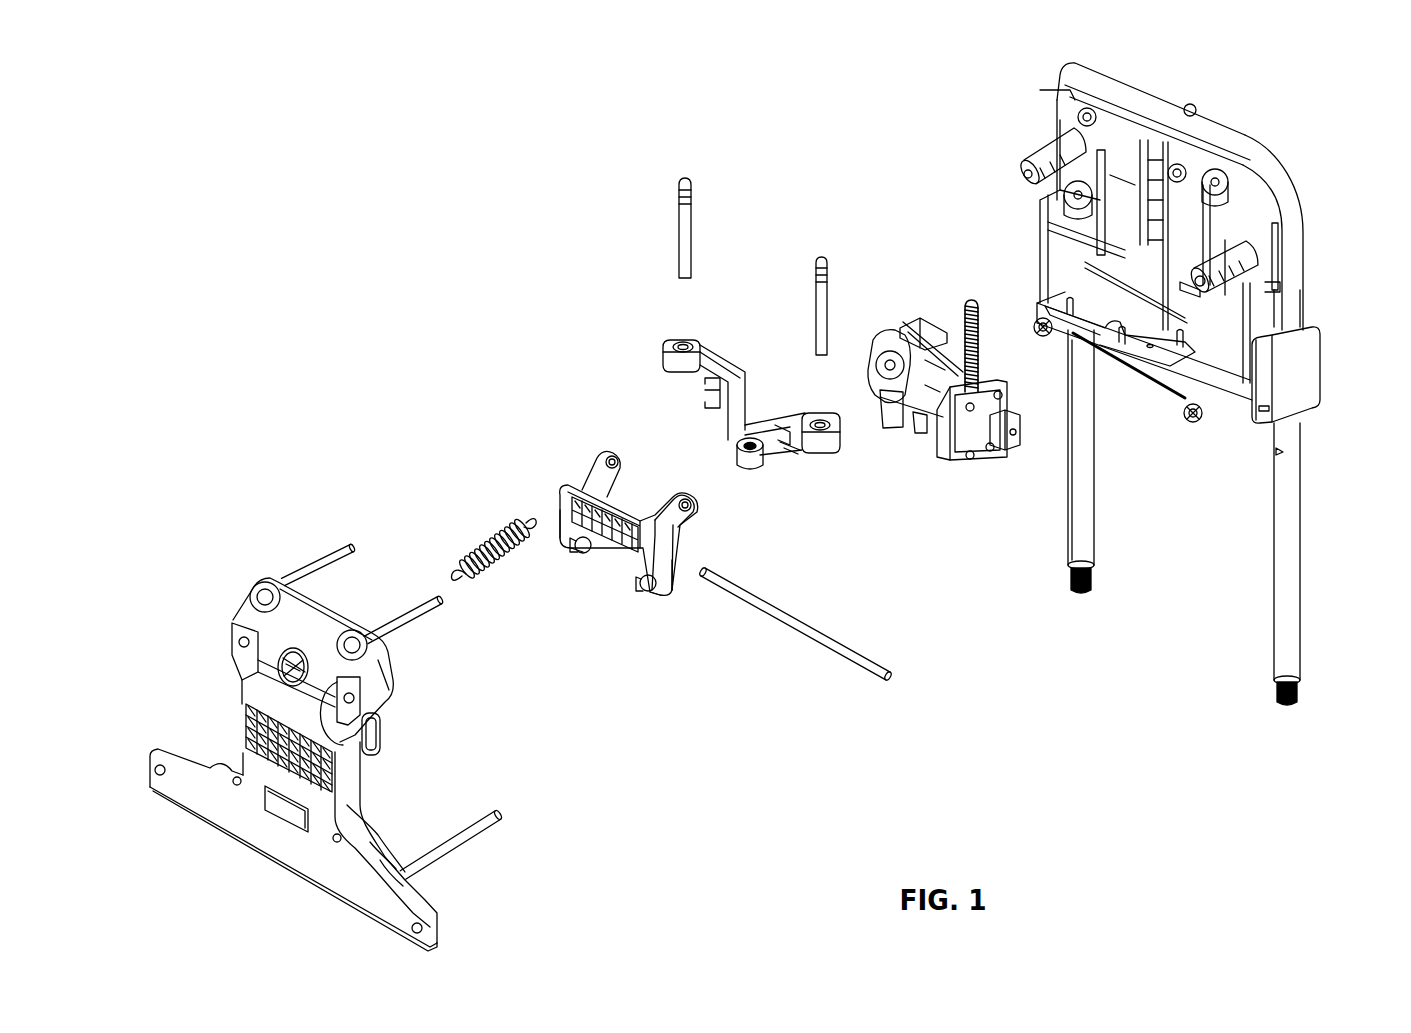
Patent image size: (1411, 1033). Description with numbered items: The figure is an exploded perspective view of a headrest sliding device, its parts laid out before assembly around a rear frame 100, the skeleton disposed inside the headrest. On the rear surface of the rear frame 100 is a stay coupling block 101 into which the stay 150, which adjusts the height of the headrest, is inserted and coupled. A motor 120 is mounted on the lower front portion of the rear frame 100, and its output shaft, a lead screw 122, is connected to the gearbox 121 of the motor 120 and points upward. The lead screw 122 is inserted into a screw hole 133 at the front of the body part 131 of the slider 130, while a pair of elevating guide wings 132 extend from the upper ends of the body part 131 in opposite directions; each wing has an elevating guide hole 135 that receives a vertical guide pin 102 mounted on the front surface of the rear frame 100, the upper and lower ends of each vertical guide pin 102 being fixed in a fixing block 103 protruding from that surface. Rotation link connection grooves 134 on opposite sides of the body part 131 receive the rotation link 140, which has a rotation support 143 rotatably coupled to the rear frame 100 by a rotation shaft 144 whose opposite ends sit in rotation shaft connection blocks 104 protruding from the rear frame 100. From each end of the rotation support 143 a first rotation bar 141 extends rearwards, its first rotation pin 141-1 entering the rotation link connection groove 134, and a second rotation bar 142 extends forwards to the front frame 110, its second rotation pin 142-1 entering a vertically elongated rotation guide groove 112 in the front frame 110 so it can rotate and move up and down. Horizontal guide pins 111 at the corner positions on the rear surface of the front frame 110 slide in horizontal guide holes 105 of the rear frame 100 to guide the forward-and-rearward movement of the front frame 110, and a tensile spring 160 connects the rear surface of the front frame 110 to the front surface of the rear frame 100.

The rear frame 100 is at (1179, 364).
The stay coupling block 101 is at (1308, 386).
The vertical guide pin 102 is at (678, 229).
The fixing block 103 is at (1078, 180).
The rotation shaft connection block 104 is at (1030, 155).
The horizontal guide hole 105 is at (1092, 108).
The front frame 110 is at (400, 817).
The horizontal guide pin 111 is at (352, 558).
The rotation guide groove 112 is at (382, 730).
The motor 120 is at (944, 386).
The gearbox 121 is at (970, 470).
The lead screw 122 is at (970, 303).
The slider 130 is at (735, 405).
The body part 131 is at (742, 447).
The elevating guide wing 132 is at (668, 354).
The screw hole 133 is at (792, 452).
The rotation link connection groove 134 is at (703, 392).
The elevating guide hole 135 is at (683, 345).
The rotation link 140 is at (631, 549).
The first rotation bar 141 is at (600, 475).
The first rotation pin 141-1 is at (685, 500).
The second rotation bar 142 is at (565, 520).
The second rotation pin 142-1 is at (580, 552).
The rotation support 143 is at (605, 545).
The rotation shaft 144 is at (792, 635).
The stay 150 is at (1270, 568).
The spring 160 is at (487, 560).